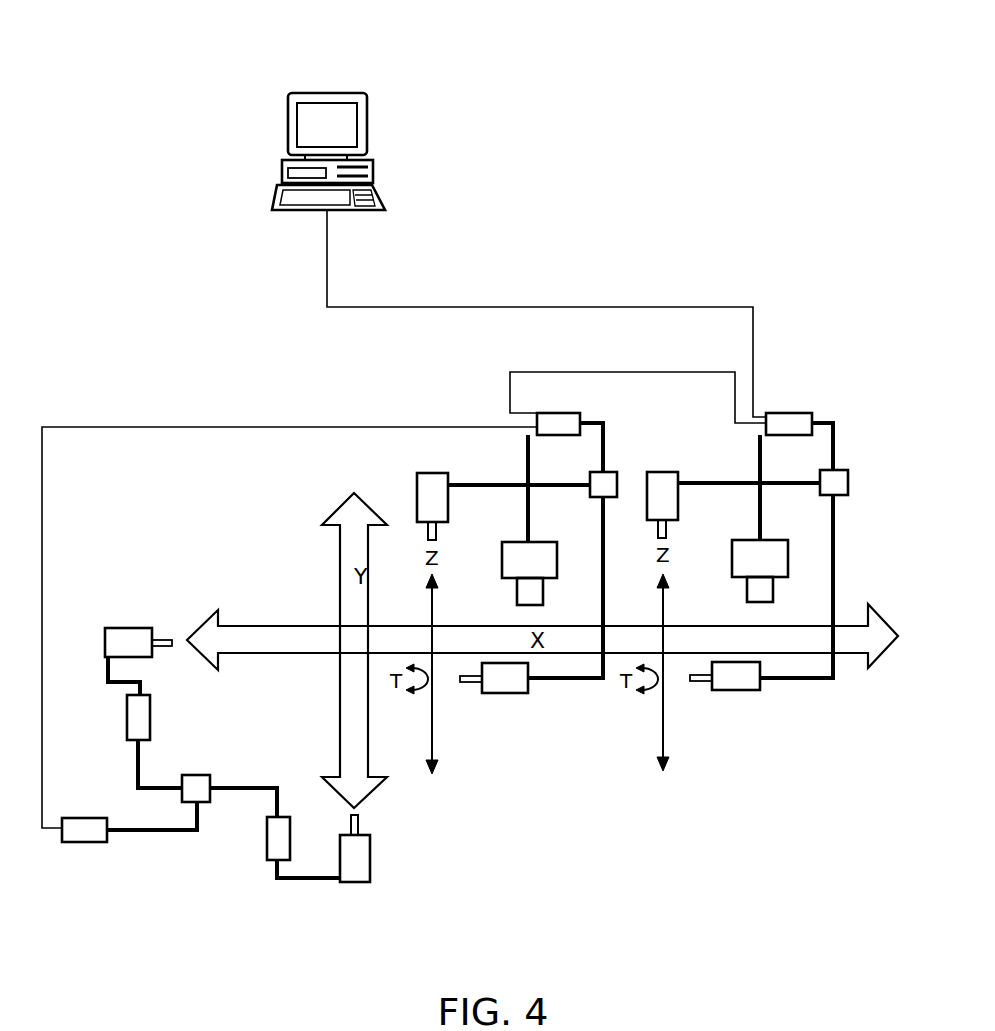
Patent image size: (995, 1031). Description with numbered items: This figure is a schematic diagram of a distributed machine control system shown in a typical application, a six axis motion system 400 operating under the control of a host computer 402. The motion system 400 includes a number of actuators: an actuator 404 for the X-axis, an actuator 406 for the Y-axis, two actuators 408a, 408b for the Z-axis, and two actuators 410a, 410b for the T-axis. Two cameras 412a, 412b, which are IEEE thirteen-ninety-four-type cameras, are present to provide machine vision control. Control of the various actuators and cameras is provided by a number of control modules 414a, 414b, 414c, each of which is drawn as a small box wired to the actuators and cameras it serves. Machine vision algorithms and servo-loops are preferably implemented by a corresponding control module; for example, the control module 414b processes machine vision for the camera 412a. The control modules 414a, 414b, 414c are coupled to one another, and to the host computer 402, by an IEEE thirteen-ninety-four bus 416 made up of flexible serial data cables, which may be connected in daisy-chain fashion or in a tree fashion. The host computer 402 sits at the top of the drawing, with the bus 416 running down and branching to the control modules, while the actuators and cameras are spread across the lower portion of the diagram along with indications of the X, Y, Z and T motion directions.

The six axis motion system 400 is at (614, 60).
The host computer 402 is at (368, 120).
The actuator 404 is at (128, 626).
The actuator 406 is at (370, 856).
The actuator 408a is at (435, 472).
The actuator 408b is at (662, 471).
The actuator 410a is at (509, 695).
The actuator 410b is at (735, 692).
The camera 412a is at (549, 541).
The camera 412b is at (779, 539).
The control module 414a is at (787, 412).
The control module 414b is at (565, 412).
The control module 414c is at (84, 845).
The IEEE 1394 bus 416 is at (534, 306).